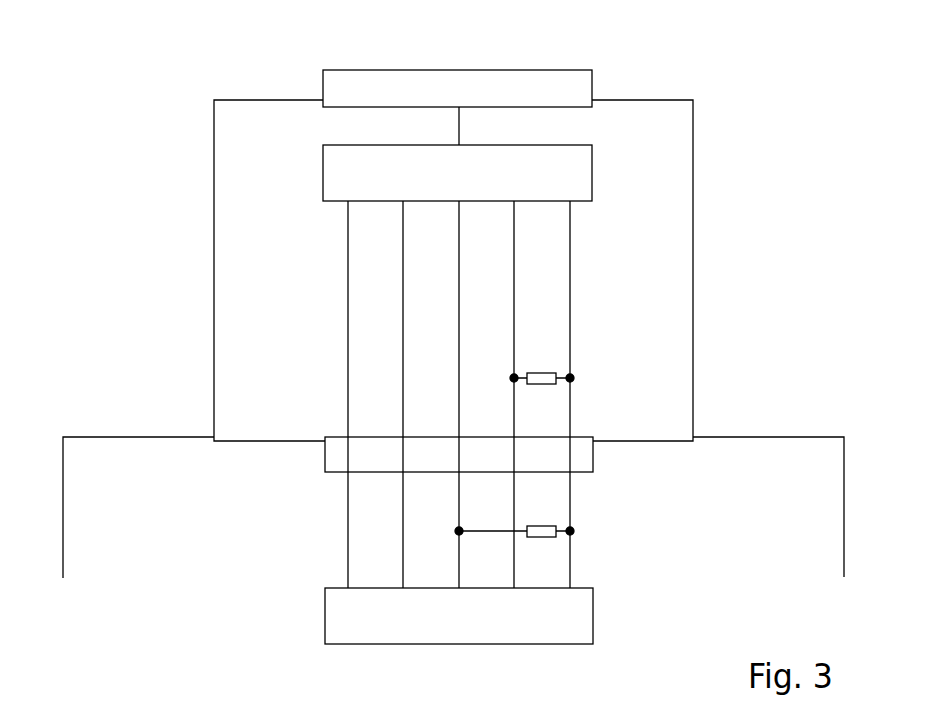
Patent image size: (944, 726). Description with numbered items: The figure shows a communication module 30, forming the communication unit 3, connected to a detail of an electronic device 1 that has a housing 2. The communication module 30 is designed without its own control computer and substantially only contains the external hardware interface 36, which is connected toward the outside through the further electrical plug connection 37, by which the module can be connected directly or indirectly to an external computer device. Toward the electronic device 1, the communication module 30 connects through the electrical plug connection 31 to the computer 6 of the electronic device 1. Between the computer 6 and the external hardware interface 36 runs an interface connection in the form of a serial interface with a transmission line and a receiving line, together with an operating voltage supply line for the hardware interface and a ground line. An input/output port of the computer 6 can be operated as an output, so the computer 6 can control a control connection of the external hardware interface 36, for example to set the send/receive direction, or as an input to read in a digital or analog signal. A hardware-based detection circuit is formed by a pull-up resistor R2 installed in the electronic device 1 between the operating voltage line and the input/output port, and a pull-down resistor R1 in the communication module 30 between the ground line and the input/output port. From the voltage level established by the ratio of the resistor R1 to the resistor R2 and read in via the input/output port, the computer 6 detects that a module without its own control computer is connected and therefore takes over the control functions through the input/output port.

The electronic device 1 is at (76, 412).
The housing 2 is at (755, 436).
The communication unit 3 is at (706, 79).
The computer 6 is at (593, 616).
The communication module 30 is at (693, 148).
The electrical plug connection 31 is at (593, 458).
The external hardware interface 36 is at (476, 192).
The further electrical plug connection 37 is at (530, 72).
The resistor R1 is at (542, 361).
The resistor R2 is at (514, 515).